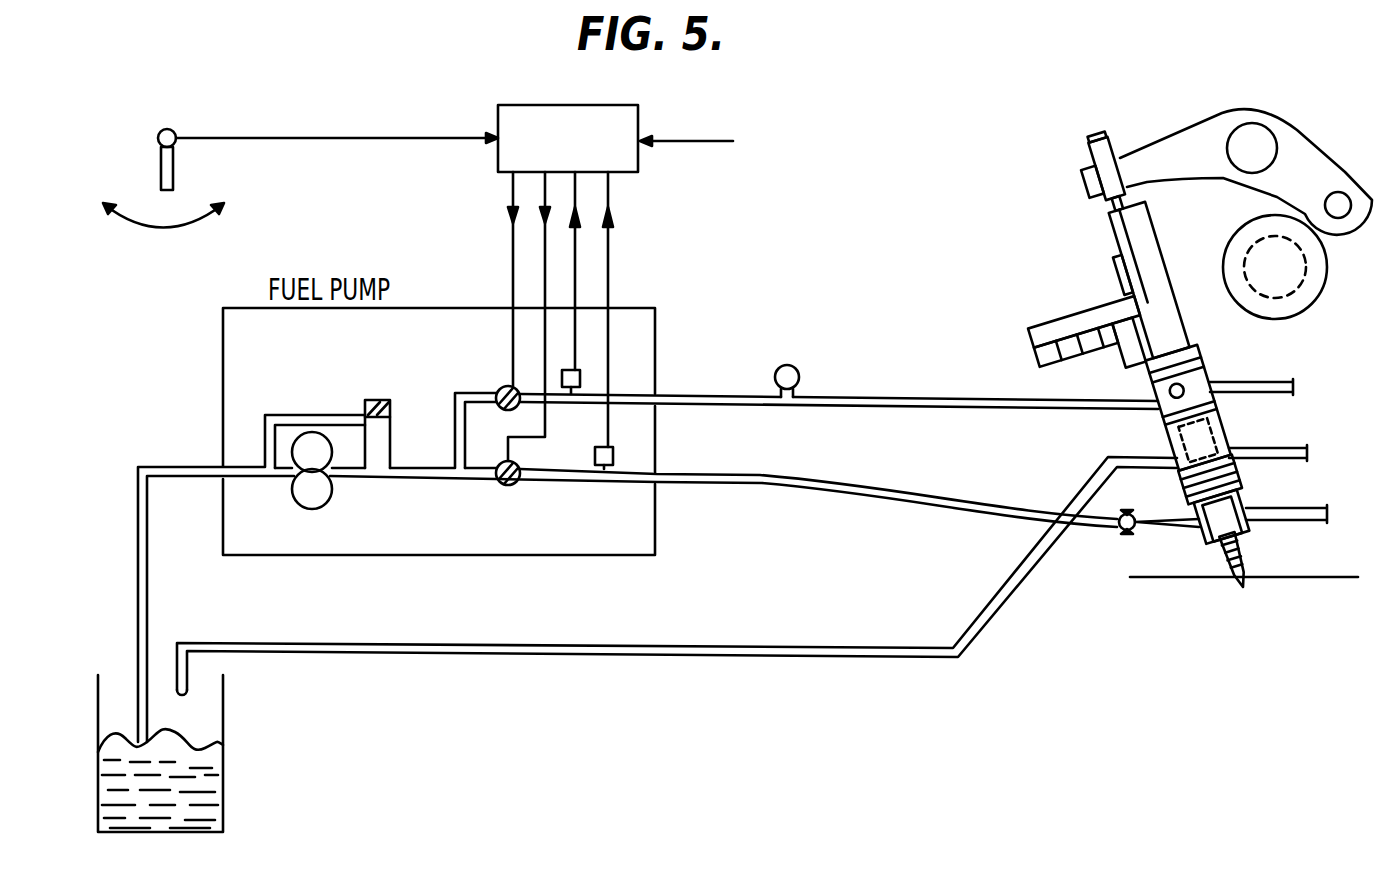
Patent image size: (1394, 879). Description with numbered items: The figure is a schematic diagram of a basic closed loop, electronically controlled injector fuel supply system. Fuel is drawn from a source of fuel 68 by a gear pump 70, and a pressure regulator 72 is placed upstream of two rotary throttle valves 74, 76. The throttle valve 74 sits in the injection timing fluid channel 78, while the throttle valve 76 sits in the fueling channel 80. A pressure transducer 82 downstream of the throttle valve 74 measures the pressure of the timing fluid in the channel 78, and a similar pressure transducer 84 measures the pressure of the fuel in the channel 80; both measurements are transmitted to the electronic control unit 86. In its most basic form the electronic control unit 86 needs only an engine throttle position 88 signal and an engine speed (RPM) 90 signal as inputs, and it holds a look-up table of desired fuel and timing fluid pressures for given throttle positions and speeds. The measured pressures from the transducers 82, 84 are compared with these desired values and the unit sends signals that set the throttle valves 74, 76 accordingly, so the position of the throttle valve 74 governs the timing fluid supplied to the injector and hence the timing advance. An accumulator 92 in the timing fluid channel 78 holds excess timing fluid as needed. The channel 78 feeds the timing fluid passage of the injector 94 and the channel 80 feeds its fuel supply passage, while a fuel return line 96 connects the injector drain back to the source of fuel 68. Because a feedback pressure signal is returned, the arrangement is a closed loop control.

The source of fuel 68 is at (223, 808).
The gear pump 70 is at (312, 508).
The pressure regulator 72 is at (378, 400).
The rotary throttle valve 74 is at (502, 389).
The rotary throttle valve 76 is at (505, 486).
The injection timing fluid channel 78 is at (698, 392).
The fueling channel 80 is at (720, 485).
The pressure transducer 82 is at (583, 373).
The pressure transducer 84 is at (614, 453).
The electronic control unit 86 is at (557, 108).
The engine throttle position 88 is at (160, 129).
The engine speed (RPM) 90 is at (828, 162).
The accumulator 92 is at (797, 366).
The injector 94 is at (1096, 268).
The fuel return line 96 is at (677, 654).